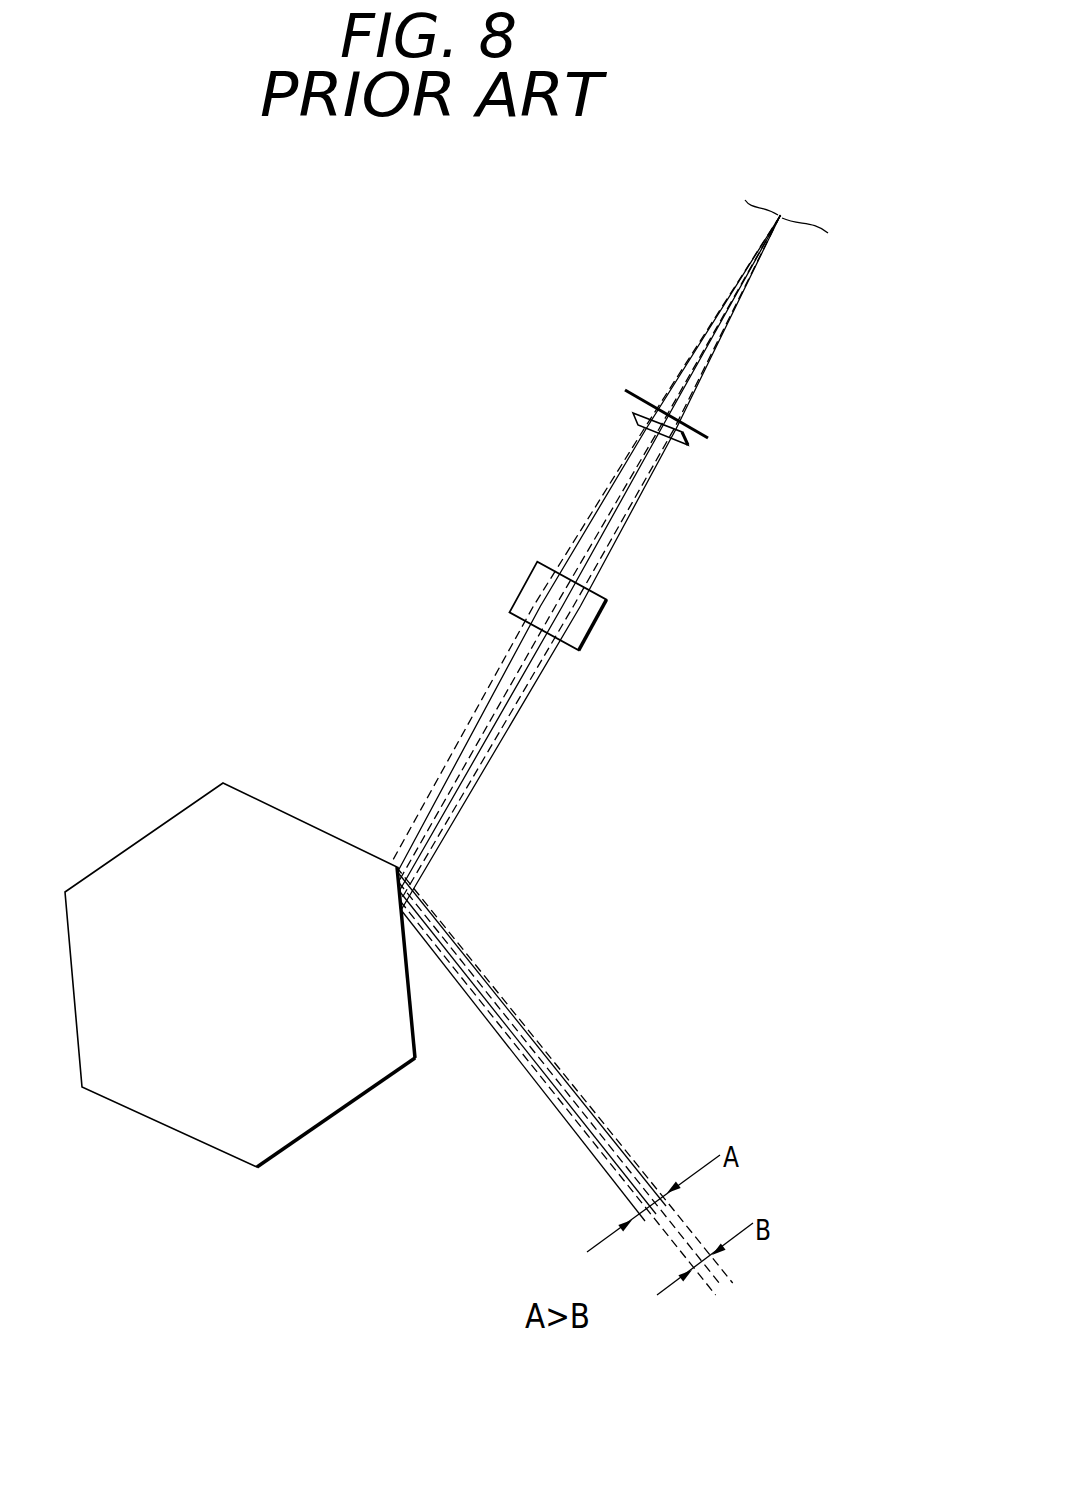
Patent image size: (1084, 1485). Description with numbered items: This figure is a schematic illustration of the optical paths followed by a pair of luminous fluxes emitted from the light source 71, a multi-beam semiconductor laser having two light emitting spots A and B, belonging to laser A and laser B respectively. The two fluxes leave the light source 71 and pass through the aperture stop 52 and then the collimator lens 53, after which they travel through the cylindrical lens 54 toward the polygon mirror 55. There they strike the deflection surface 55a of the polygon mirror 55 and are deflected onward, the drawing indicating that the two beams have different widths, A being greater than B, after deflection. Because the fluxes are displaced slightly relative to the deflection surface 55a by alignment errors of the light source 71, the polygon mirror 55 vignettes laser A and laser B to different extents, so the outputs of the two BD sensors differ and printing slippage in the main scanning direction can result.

The light source 71 is at (860, 204).
The aperture stop 52 is at (708, 438).
The collimator lens 53 is at (677, 448).
The cylindrical lens 54 is at (587, 640).
The polygon mirror 55 is at (327, 1103).
The deflection surface 55a is at (418, 1045).